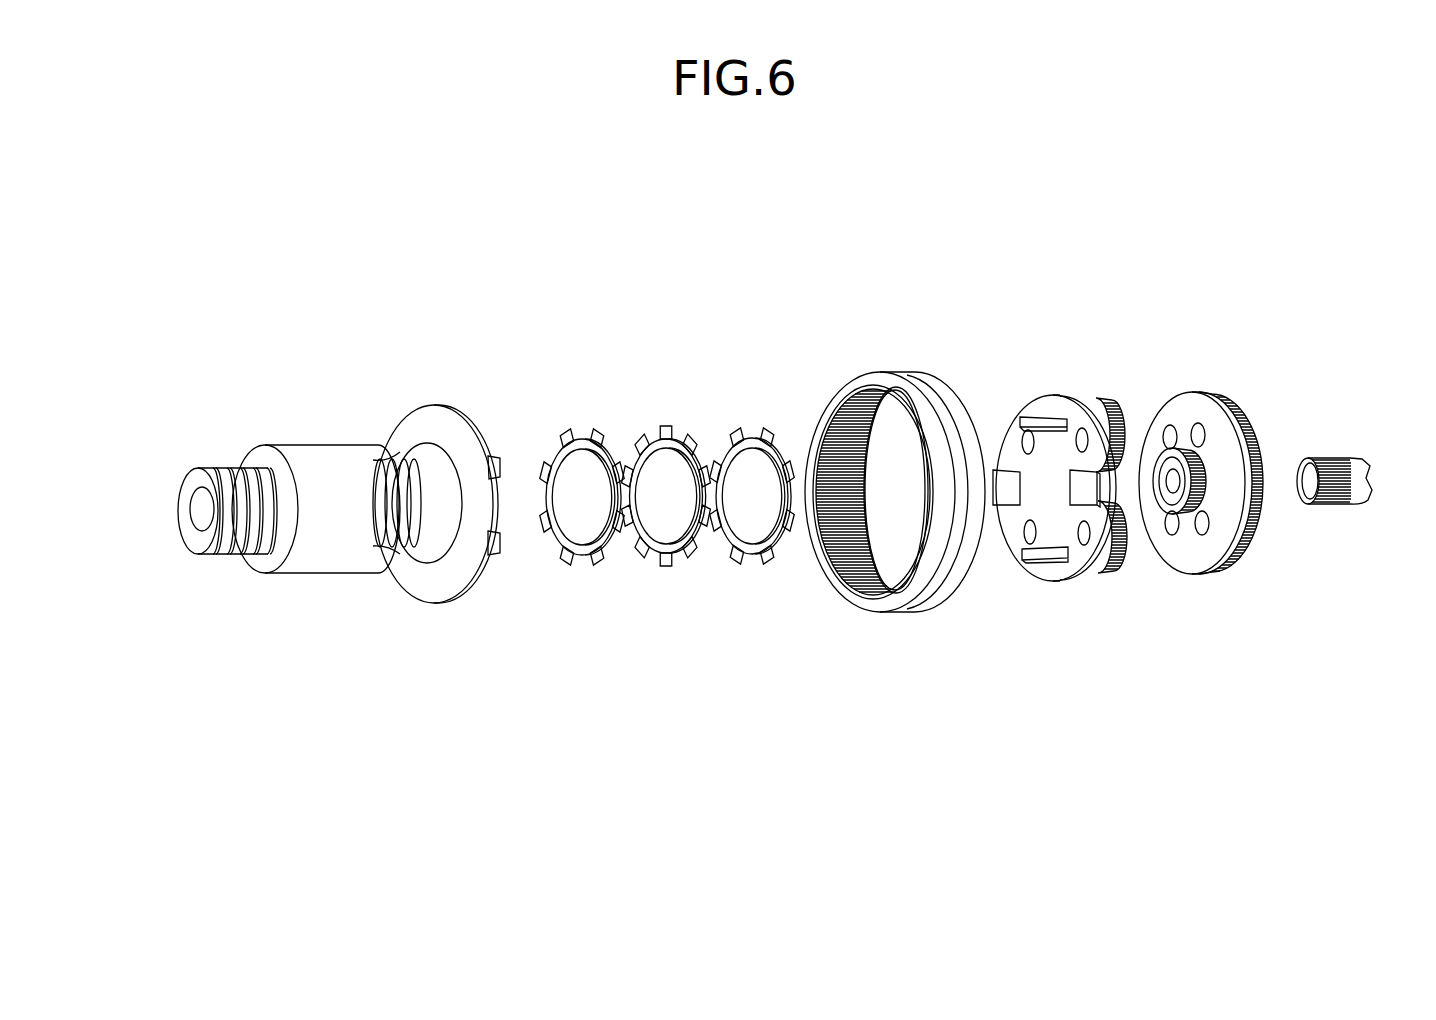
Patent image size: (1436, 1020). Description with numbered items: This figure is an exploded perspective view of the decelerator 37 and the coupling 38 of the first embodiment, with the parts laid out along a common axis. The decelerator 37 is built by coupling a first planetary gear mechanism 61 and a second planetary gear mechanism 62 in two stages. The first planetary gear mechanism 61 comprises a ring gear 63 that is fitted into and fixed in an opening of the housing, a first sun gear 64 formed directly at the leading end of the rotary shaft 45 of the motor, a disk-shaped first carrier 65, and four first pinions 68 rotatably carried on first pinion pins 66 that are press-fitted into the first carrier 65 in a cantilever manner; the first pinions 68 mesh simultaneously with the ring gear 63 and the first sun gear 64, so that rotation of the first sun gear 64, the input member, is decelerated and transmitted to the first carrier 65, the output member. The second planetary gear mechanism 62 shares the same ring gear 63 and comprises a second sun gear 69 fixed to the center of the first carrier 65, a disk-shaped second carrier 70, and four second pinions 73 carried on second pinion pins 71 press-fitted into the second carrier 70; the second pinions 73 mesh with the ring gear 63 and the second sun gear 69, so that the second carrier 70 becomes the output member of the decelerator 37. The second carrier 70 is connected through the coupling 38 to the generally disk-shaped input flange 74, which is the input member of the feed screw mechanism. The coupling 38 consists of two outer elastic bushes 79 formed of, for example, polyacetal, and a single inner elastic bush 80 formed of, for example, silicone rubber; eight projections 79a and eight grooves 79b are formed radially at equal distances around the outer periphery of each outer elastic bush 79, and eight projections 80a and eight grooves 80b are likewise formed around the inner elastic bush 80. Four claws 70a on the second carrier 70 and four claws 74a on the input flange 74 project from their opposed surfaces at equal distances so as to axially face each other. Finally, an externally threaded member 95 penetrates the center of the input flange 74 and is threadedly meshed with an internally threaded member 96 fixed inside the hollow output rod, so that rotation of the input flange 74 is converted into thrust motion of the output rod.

The decelerator 37 is at (1105, 296).
The coupling 38 is at (700, 338).
The rotary shaft 45 is at (1358, 460).
The first planetary gear mechanism 61 is at (1288, 403).
The second planetary gear mechanism 62 is at (1115, 366).
The ring gear 63 is at (905, 374).
The first sun gear 64 is at (1323, 458).
The first carrier 65 is at (1200, 557).
The first pinion pins 66 is at (1198, 424).
The first pinions 68 is at (1248, 392).
The second sun gear 69 is at (1205, 472).
The second carrier 70 is at (1052, 390).
The claws 70a is at (998, 488).
The second pinion pins 71 is at (1025, 438).
The second pinions 73 is at (1120, 420).
The input flange 74 is at (415, 396).
The claws 74a is at (498, 456).
The outer elastic bushes 79 is at (578, 420).
The projections 79a is at (551, 442).
The grooves 79b is at (598, 435).
The inner elastic bush 80 is at (657, 385).
The projections 80a is at (655, 440).
The grooves 80b is at (642, 456).
The externally threaded member 95 is at (236, 470).
The internally threaded member 96 is at (318, 560).